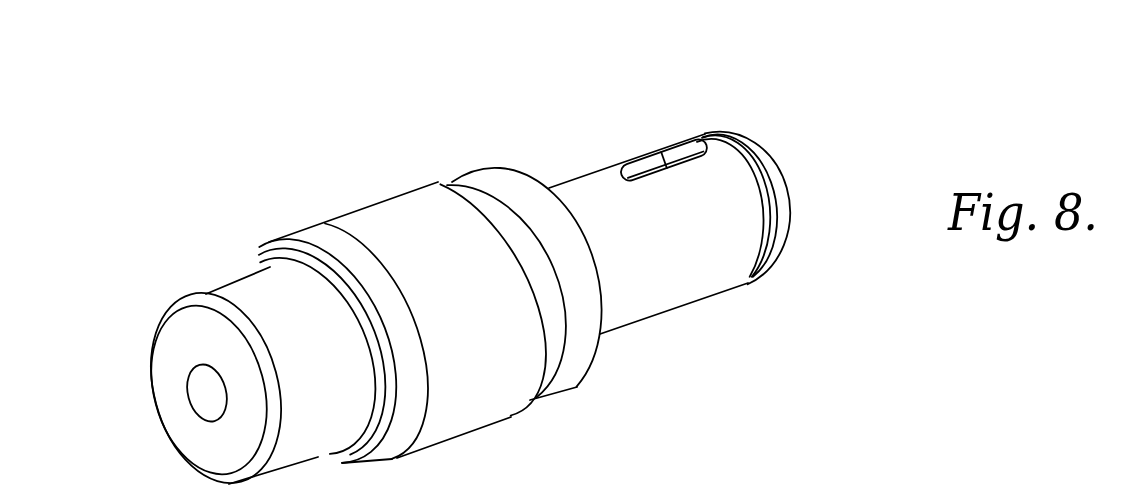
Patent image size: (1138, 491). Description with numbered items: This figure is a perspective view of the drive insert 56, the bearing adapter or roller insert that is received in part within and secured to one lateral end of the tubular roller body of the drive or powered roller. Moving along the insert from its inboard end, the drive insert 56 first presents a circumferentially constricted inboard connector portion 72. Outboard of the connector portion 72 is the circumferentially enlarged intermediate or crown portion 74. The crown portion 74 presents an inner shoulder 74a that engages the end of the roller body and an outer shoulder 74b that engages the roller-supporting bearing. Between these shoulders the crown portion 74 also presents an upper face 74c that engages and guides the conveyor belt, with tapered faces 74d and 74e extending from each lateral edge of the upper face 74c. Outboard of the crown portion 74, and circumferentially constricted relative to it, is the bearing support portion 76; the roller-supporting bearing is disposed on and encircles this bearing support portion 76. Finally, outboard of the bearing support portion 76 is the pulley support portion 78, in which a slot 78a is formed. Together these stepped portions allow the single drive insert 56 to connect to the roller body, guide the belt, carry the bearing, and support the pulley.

The drive insert 56 is at (735, 75).
The inboard connector portion 72 is at (207, 293).
The crown portion 74 is at (367, 213).
The inner shoulder 74a is at (283, 254).
The outer shoulder 74b is at (543, 187).
The upper face 74c is at (416, 203).
The tapered face 74d is at (348, 252).
The tapered face 74e is at (522, 243).
The bearing support portion 76 is at (597, 175).
The pulley support portion 78 is at (688, 137).
The slot 78a is at (657, 147).